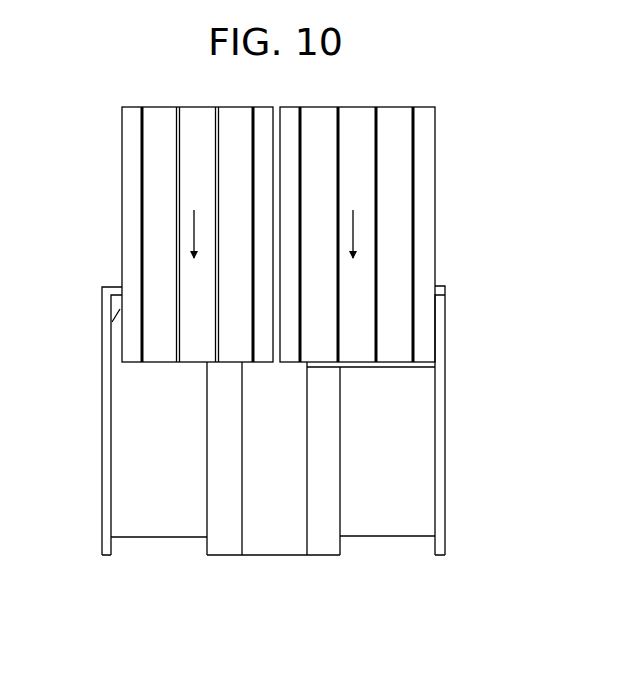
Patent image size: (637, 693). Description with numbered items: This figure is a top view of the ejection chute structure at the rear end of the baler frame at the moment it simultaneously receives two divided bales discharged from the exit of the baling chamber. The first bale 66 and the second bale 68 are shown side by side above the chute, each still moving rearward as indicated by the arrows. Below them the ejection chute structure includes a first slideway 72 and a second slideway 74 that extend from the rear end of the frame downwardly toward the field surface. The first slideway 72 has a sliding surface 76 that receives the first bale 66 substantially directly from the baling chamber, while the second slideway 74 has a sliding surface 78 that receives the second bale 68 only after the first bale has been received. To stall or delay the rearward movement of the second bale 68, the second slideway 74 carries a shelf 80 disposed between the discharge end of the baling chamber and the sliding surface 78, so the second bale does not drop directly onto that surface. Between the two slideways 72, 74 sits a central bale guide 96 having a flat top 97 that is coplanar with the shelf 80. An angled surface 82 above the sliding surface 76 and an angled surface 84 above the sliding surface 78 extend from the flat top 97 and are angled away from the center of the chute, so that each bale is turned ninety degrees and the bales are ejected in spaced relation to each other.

The first bale 66 is at (121, 166).
The second bale 68 is at (437, 163).
The first slideway 72 is at (121, 442).
The second slideway 74 is at (426, 441).
The sliding surface 76 is at (172, 517).
The sliding surface 78 is at (406, 517).
The shelf 80 is at (436, 365).
The angled surface 82 is at (238, 494).
The angled surface 84 is at (338, 494).
The central bale guide 96 is at (272, 547).
The flat top 97 is at (291, 517).